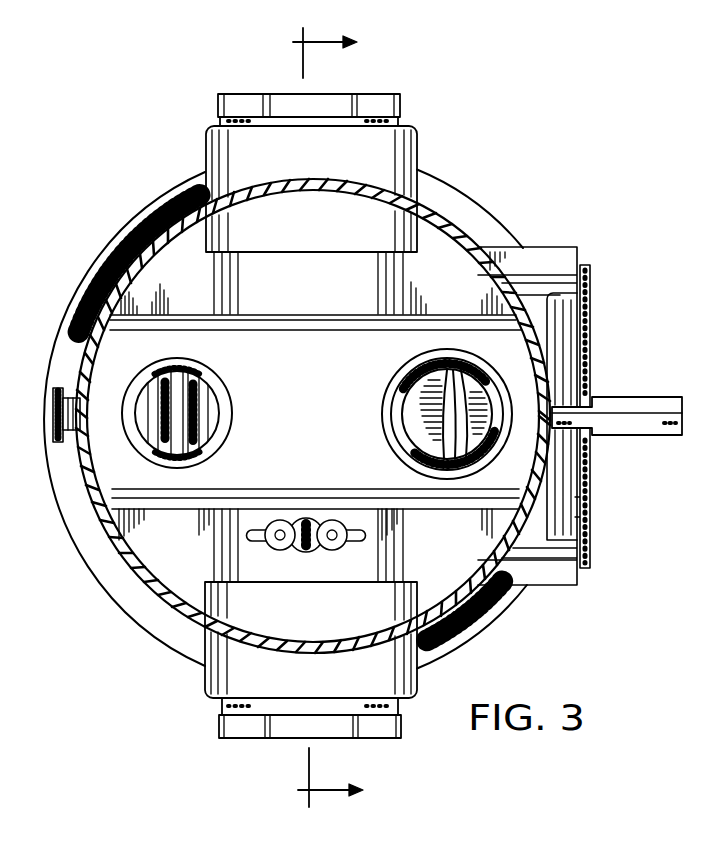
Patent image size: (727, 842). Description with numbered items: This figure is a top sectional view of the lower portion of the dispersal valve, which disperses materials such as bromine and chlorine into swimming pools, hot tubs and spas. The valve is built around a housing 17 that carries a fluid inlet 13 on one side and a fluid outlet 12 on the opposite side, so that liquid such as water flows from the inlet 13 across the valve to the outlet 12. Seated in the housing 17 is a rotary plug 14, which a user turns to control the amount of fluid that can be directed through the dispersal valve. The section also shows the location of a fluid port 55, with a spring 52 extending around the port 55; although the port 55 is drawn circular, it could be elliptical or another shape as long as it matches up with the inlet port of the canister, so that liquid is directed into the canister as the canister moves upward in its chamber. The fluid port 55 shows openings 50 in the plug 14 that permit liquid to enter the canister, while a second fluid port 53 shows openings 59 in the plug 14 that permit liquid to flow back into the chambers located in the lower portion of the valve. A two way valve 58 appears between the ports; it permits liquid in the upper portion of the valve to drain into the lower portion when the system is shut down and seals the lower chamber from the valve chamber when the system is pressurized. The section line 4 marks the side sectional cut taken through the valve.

The section line 4- 4 is at (315, 420).
The fluid outlet 12 is at (371, 94).
The fluid inlet 13 is at (258, 740).
The rotary plug 14 is at (636, 404).
The housing 17 is at (452, 222).
The openings 50 is at (464, 458).
The spring 52 is at (419, 449).
The fluid port 53 is at (192, 449).
The fluid port 55 is at (393, 426).
The two way valve 58 is at (305, 524).
The openings 59 is at (181, 450).